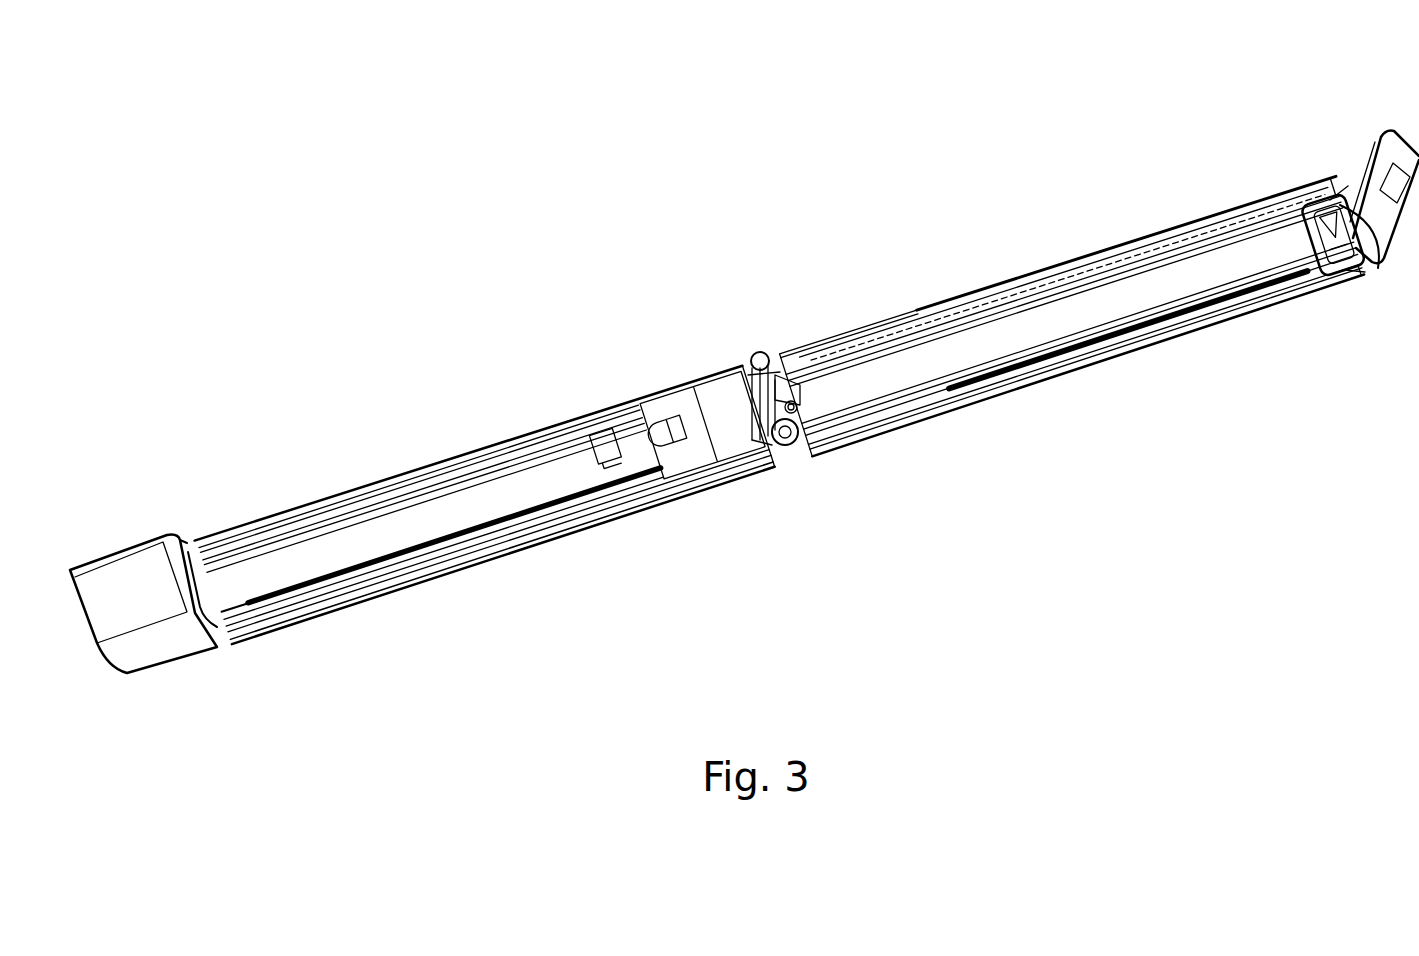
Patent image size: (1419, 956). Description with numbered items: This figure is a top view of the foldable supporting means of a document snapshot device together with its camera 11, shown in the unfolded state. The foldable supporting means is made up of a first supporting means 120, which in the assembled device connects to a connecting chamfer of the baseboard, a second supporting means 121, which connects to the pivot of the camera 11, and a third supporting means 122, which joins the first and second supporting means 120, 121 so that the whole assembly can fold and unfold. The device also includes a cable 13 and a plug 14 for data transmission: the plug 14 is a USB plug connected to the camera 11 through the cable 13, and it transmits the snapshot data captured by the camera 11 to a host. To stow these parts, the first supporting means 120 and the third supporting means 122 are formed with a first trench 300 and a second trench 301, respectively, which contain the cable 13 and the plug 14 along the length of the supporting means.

The camera 11 is at (1381, 136).
The cable 13 is at (372, 497).
The plug 14 is at (681, 438).
The first supporting means 120 is at (193, 658).
The second supporting means 121 is at (1373, 283).
The third supporting means 122 is at (815, 337).
The first trench 300 is at (532, 435).
The second trench 301 is at (997, 292).